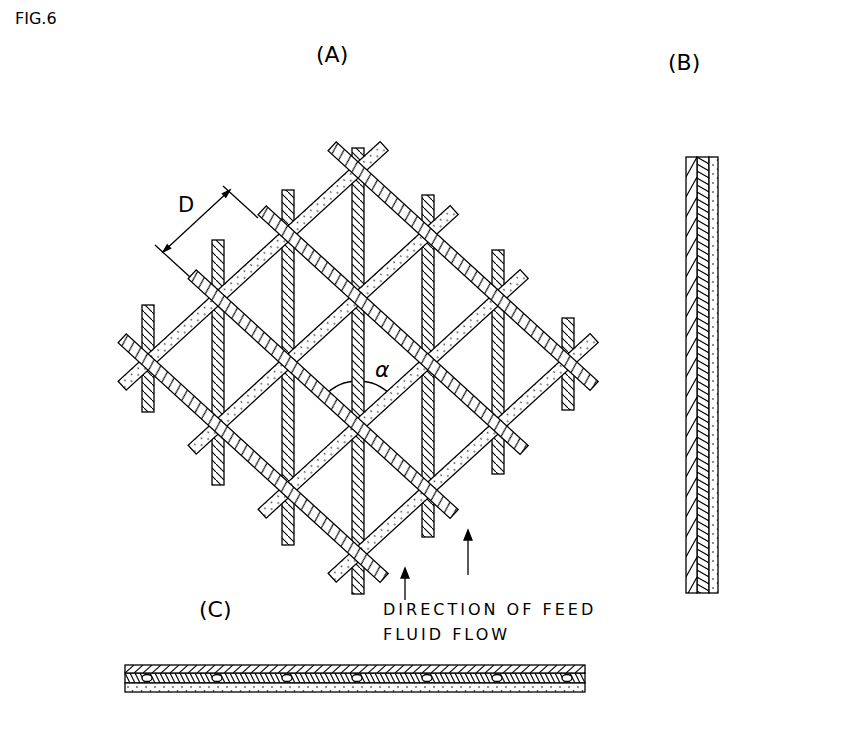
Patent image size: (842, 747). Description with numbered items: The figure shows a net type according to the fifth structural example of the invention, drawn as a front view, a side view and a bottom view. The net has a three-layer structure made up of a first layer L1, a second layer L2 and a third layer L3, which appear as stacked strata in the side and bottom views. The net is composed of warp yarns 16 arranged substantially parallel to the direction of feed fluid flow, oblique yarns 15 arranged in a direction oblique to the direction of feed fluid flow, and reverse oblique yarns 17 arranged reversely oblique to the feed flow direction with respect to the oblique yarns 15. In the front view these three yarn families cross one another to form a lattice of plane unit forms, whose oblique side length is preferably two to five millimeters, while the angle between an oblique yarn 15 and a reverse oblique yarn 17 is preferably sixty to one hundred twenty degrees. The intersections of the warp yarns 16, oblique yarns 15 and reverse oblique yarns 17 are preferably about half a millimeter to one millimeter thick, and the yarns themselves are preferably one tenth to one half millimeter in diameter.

The oblique yarns 15 is at (433, 441).
The warp yarns 16 is at (414, 426).
The reverse oblique yarns 17 is at (393, 407).
The first layer L1 is at (720, 283).
The second layer L2 is at (708, 307).
The third layer L3 is at (690, 311).